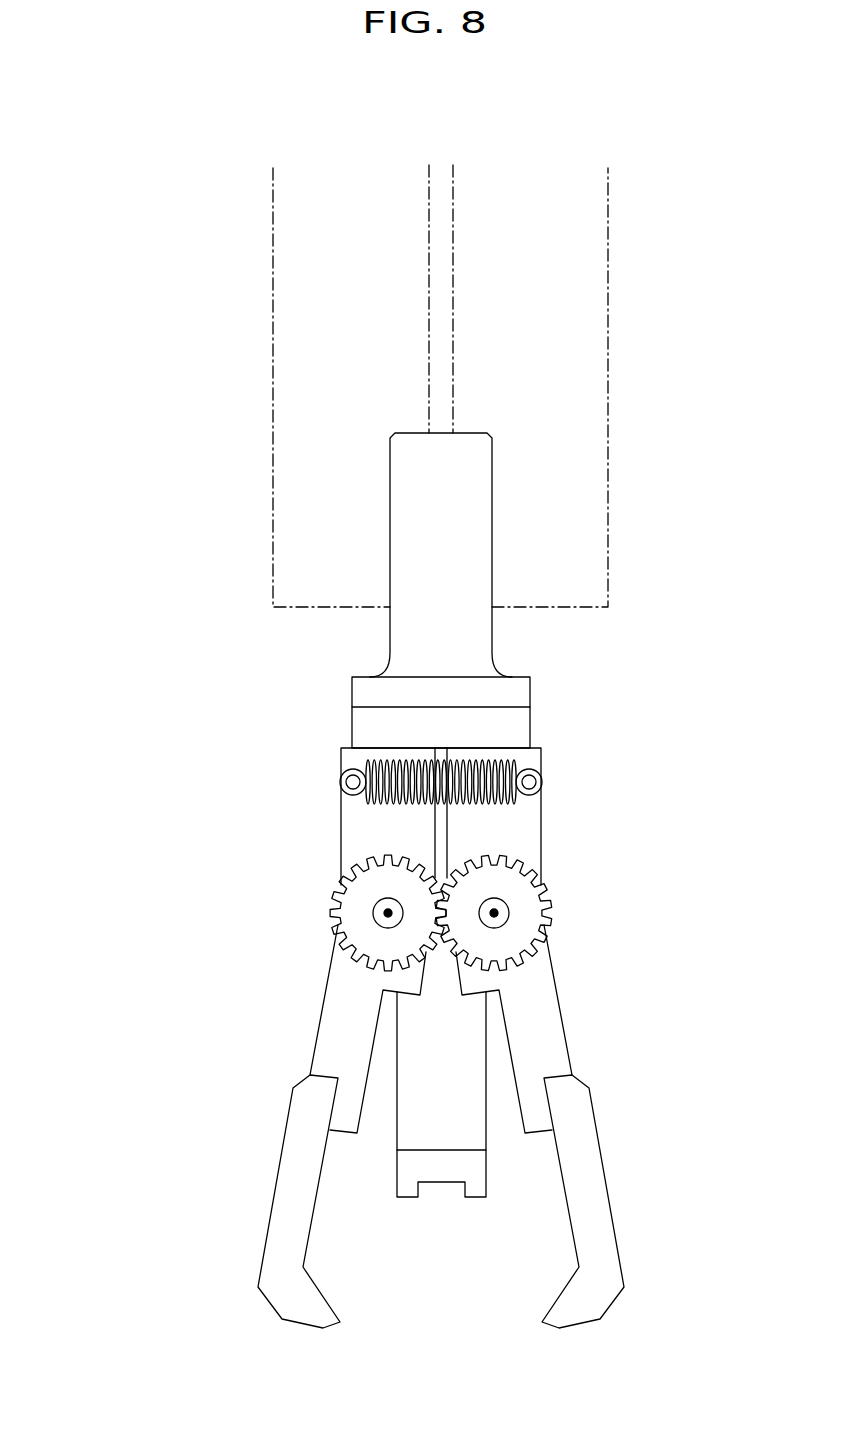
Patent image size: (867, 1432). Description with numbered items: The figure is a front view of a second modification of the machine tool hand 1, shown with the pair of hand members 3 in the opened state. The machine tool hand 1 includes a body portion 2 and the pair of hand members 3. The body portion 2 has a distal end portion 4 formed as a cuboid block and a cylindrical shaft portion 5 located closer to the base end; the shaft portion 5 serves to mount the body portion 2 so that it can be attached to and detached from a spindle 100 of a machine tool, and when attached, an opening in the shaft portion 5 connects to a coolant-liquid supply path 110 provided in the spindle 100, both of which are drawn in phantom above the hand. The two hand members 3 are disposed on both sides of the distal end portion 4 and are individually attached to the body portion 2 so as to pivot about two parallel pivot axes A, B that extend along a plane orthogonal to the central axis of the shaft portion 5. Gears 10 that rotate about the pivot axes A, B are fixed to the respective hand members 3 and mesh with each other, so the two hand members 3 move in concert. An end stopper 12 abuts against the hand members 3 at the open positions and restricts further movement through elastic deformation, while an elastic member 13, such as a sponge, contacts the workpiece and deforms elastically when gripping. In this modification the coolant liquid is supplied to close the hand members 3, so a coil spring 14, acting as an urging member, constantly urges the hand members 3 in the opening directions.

The machine tool hand 1 is at (153, 715).
The body portion 2 is at (335, 758).
The hand members 3 is at (280, 1158).
The distal end portion 4 is at (487, 1038).
The shaft portion 5 is at (390, 505).
The gears 10 is at (333, 890).
The end stopper 12 is at (531, 722).
The elastic member 13 is at (468, 1197).
The coil spring 14 is at (498, 805).
The spindle 100 is at (273, 313).
The coolant-liquid supply path 110 is at (447, 223).
The pivot axis A is at (385, 913).
The pivot axis B is at (497, 913).